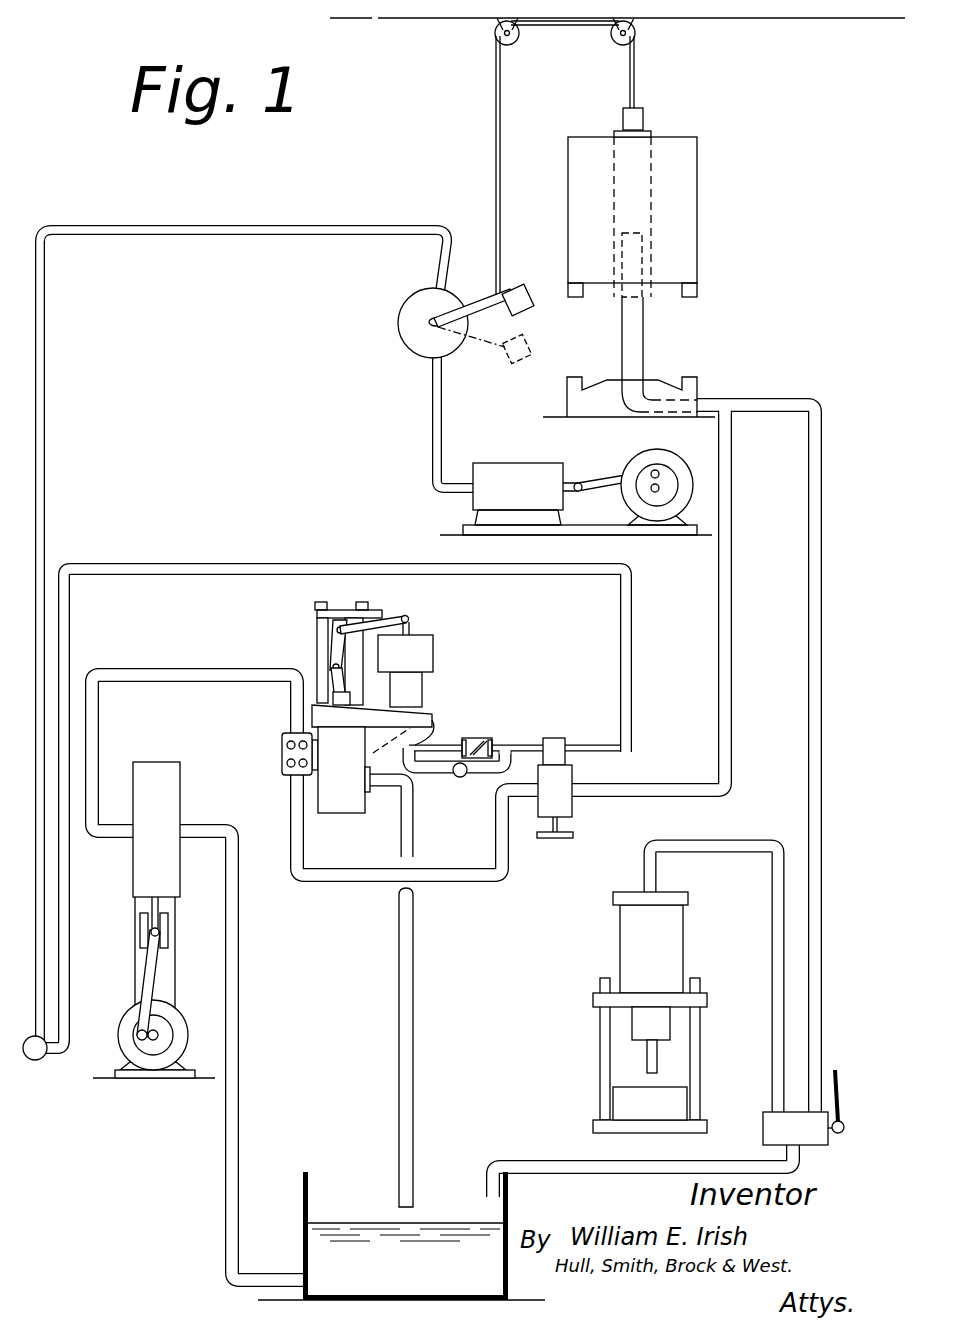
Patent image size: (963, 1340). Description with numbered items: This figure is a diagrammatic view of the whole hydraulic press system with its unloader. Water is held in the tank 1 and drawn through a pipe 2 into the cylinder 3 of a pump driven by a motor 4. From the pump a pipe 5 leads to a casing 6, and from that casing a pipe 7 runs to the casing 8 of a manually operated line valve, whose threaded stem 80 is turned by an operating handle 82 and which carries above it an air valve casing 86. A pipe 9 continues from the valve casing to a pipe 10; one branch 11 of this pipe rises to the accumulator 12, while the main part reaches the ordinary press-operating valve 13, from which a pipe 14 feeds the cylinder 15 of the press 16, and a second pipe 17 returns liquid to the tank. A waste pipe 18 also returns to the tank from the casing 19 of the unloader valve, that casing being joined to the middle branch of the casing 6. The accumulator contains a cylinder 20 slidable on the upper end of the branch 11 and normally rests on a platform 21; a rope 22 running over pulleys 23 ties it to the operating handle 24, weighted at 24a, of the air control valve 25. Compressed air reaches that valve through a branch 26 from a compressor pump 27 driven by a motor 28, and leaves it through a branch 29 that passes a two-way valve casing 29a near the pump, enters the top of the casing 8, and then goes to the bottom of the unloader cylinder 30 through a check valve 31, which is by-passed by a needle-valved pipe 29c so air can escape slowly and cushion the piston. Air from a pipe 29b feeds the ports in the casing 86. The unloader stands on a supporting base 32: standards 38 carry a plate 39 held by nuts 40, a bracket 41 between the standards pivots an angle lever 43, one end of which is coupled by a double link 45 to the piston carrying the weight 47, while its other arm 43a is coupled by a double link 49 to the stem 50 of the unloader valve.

The tank 1 is at (368, 1186).
The pipe 2 is at (239, 1008).
The pump cylinder 3 is at (156, 829).
The motor 4 is at (172, 1018).
The pipe 5 is at (95, 733).
The casing 6 is at (282, 752).
The pipe 7 is at (290, 802).
The valve casing 8 is at (572, 778).
The pipe 9 is at (664, 784).
The pipe 10 is at (708, 402).
The branch pipe 11 is at (644, 331).
The accumulator 12 is at (699, 228).
The press-operating valve 13 is at (803, 1107).
The pipe 14 is at (772, 993).
The press cylinder 15 is at (685, 918).
The press 16 is at (600, 1046).
The pipe 17 is at (563, 1160).
The waste pipe 18 is at (414, 995).
The unloader valve casing 19 is at (362, 792).
The cylinder 20 is at (650, 134).
The bed or platform 21 is at (699, 292).
The rope 22 is at (636, 78).
The pulleys 23 is at (516, 44).
The operating handle 24 is at (487, 300).
The weight 24a is at (505, 292).
The air control valve 25 is at (420, 333).
The conduit branch 26 is at (442, 410).
The compressor pump 27 is at (530, 470).
The motor 28 is at (670, 468).
The conduit branch 29 is at (404, 230).
The two-way valve casing 29a is at (460, 778).
The pipe 29b is at (633, 652).
The pipe 29c is at (483, 782).
The unloader cylinder 30 is at (424, 692).
The check valve 31 is at (482, 742).
The supporting base 32 is at (433, 720).
The standards 38 is at (317, 628).
The plate 39 is at (398, 606).
The nuts 40 is at (320, 602).
The bracket 41 is at (343, 610).
The angle lever 43 is at (410, 620).
The lever arm 43a is at (333, 648).
The double link 45 is at (411, 628).
The weight 47 is at (434, 653).
The double link 49 is at (333, 668).
The stem 50 is at (333, 700).
The valve stem 80 is at (560, 828).
The operating handle 82 is at (574, 836).
The air valve casing 86 is at (566, 745).